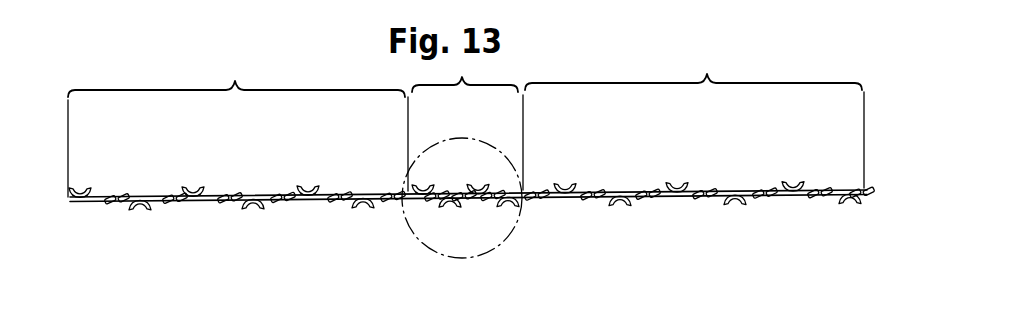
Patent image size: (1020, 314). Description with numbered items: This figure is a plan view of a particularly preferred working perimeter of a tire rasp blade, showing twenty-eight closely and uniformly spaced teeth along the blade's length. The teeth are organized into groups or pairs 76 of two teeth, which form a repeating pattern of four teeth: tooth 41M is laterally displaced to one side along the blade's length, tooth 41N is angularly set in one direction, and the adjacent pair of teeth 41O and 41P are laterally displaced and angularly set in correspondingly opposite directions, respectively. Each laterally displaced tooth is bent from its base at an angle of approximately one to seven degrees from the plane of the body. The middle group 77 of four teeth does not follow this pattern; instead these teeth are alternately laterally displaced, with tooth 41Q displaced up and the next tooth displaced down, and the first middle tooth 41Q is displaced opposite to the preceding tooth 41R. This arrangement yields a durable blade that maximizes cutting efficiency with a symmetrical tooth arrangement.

The tooth 41M is at (196, 192).
The tooth 41N is at (226, 204).
The tooth 41O is at (258, 193).
The tooth 41P is at (291, 205).
The tooth 41Q is at (431, 186).
The tooth 41R is at (369, 205).
The groups or pairs of two teeth 76 is at (113, 205).
The middle group of four teeth 77 is at (507, 235).